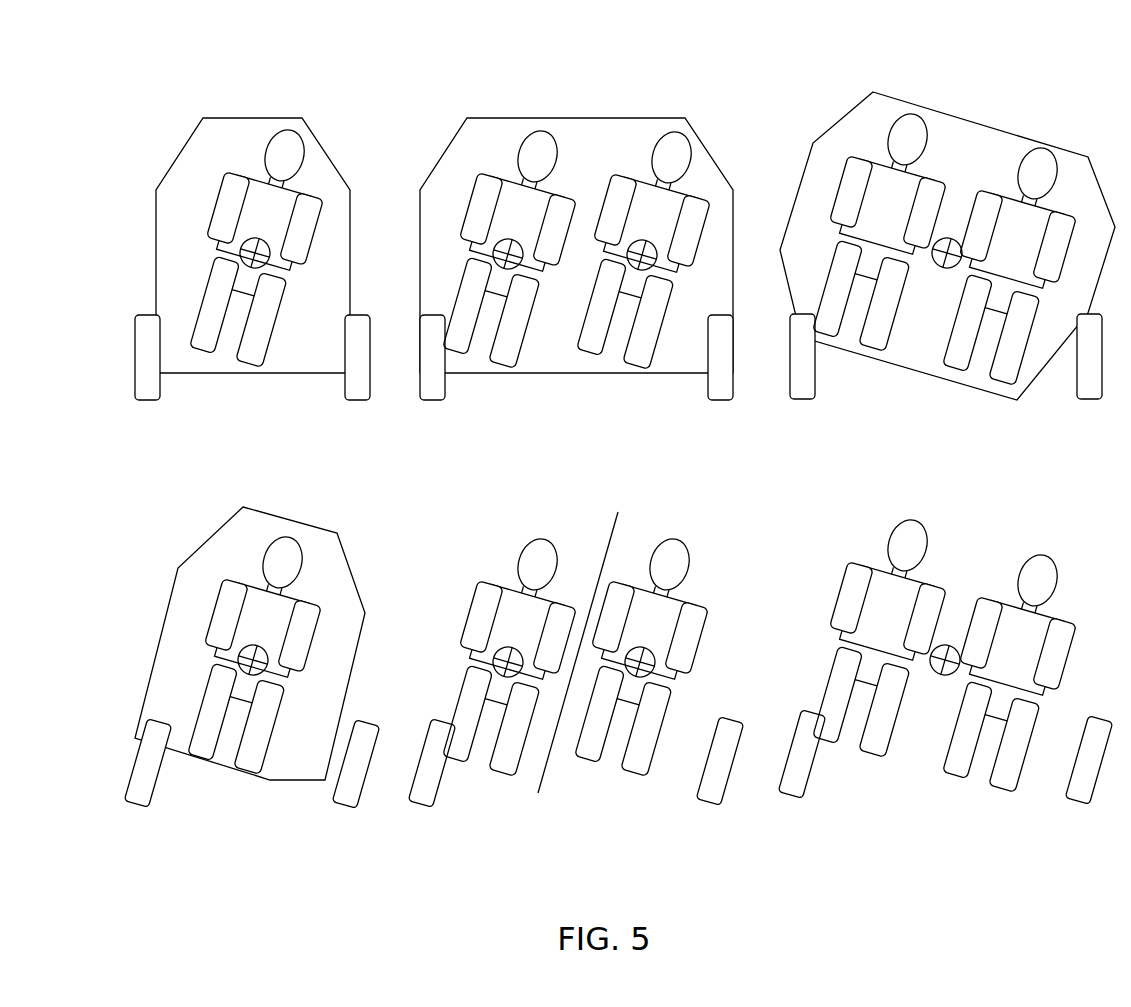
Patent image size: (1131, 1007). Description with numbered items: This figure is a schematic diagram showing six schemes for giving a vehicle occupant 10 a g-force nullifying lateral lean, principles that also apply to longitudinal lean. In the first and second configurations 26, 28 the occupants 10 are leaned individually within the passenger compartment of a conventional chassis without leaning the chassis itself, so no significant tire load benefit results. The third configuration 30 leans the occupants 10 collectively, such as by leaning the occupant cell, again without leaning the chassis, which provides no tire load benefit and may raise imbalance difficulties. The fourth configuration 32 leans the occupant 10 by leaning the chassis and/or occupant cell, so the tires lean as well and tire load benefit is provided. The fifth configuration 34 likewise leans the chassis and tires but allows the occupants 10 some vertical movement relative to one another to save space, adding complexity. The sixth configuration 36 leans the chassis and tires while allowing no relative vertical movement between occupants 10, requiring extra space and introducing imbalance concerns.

The vehicle occupant 10 is at (320, 177).
The first configuration 26 is at (253, 105).
The second configuration 28 is at (580, 100).
The third configuration 30 is at (972, 102).
The fourth configuration 32 is at (260, 827).
The fifth configuration 34 is at (577, 807).
The sixth configuration 36 is at (945, 828).